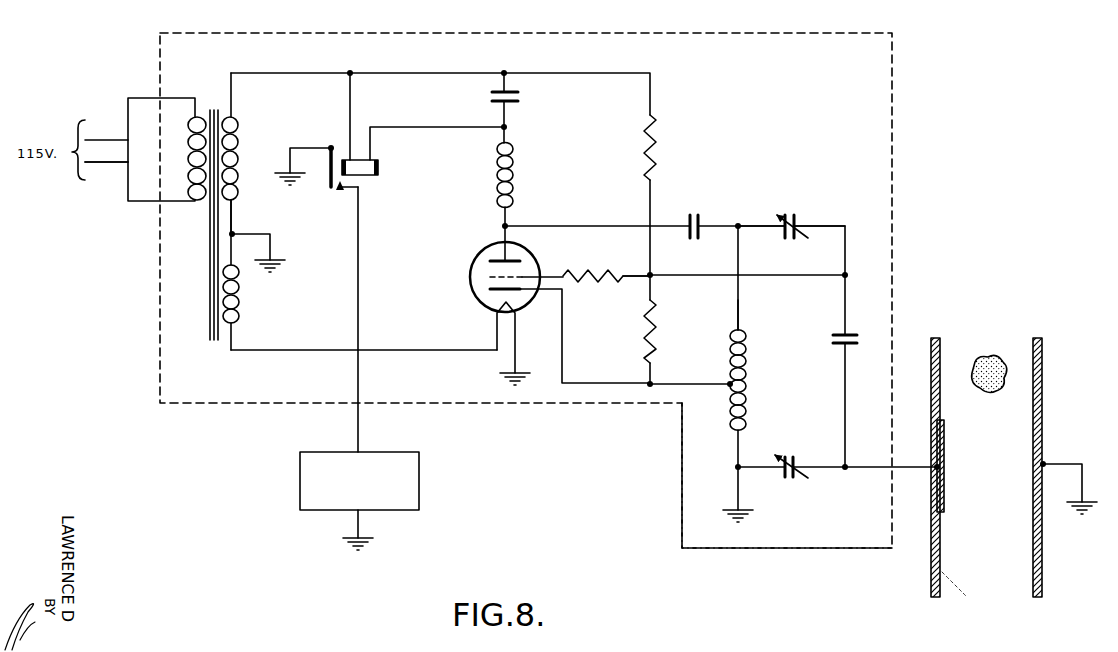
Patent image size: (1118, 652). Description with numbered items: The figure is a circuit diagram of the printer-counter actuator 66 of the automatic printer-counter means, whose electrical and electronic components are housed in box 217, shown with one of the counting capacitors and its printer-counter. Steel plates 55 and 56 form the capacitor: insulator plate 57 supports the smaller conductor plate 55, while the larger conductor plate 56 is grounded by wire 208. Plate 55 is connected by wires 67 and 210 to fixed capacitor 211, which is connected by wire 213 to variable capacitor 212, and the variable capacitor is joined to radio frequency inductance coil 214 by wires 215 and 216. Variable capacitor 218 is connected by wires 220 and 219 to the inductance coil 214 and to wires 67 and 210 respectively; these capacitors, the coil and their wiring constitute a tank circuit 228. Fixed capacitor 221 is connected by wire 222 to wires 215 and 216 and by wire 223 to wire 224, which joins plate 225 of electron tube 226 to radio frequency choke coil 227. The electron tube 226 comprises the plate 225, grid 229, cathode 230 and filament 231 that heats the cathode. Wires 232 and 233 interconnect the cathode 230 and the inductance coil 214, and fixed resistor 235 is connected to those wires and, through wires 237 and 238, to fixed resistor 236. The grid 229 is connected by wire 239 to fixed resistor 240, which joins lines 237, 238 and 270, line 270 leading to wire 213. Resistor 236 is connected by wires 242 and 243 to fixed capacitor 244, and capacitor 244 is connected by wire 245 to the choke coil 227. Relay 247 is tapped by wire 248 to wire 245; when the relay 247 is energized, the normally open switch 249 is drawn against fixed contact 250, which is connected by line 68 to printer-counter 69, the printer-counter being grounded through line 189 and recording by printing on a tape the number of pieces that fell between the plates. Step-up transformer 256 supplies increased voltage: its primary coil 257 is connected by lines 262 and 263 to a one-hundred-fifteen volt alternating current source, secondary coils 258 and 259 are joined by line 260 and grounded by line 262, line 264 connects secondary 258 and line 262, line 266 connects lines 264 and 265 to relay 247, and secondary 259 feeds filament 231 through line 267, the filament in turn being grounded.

The smaller conductor plate 55 is at (932, 498).
The larger conductor plate 56 is at (1043, 551).
The insulator plate 57 is at (930, 590).
The printer-counter actuator 66 is at (676, 440).
The wire 67 is at (870, 460).
The wire 68 is at (359, 428).
The printer-counter 69 is at (420, 478).
The ground line 189 is at (350, 528).
The ground wire 208 is at (1070, 462).
The wire 210 is at (845, 393).
The fixed capacitor 211 is at (857, 345).
The variable capacitor 212 is at (797, 213).
The wire 213 is at (831, 228).
The radio frequency inductance coil 214 is at (748, 359).
The wire 215 is at (765, 228).
The wire 216 is at (739, 315).
The box 217 is at (893, 225).
The variable capacitor 218 is at (795, 455).
The wire 219 is at (826, 471).
The wire 220 is at (765, 471).
The fixed capacitor 221 is at (693, 213).
The wire 222 is at (740, 220).
The wire 223 is at (584, 222).
The wire 224 is at (501, 233).
The plate 225 is at (521, 261).
The electron tube 226 is at (467, 251).
The radio frequency choke coil 227 is at (515, 167).
The tank circuit 228 is at (882, 306).
The grid 229 is at (489, 278).
The cathode 230 is at (494, 293).
The filament 231 is at (513, 305).
The wire 232 is at (563, 343).
The wire 233 is at (695, 382).
The fixed resistor 235 is at (653, 327).
The fixed resistor 236 is at (655, 151).
The wire 237 is at (651, 293).
The wire 238 is at (651, 258).
The wire 239 is at (557, 274).
The fixed resistor 240 is at (600, 284).
The wire 242 is at (623, 71).
The wire 243 is at (506, 84).
The fixed capacitor 244 is at (518, 96).
The wire 245 is at (507, 118).
The relay 247 is at (370, 176).
The wire 248 is at (446, 128).
The switch 249 is at (329, 189).
The fixed contact 250 is at (341, 196).
The step-up transformer 256 is at (212, 106).
The primary coil 257 is at (196, 172).
The secondary coil 258 is at (237, 158).
The secondary coil 259 is at (240, 290).
The line 260 is at (233, 213).
The line 262 is at (130, 97).
The line 263 is at (131, 206).
The line 264 is at (290, 71).
The line 265 is at (430, 71).
The line 266 is at (352, 100).
The line 267 is at (300, 348).
The line 270 is at (800, 277).